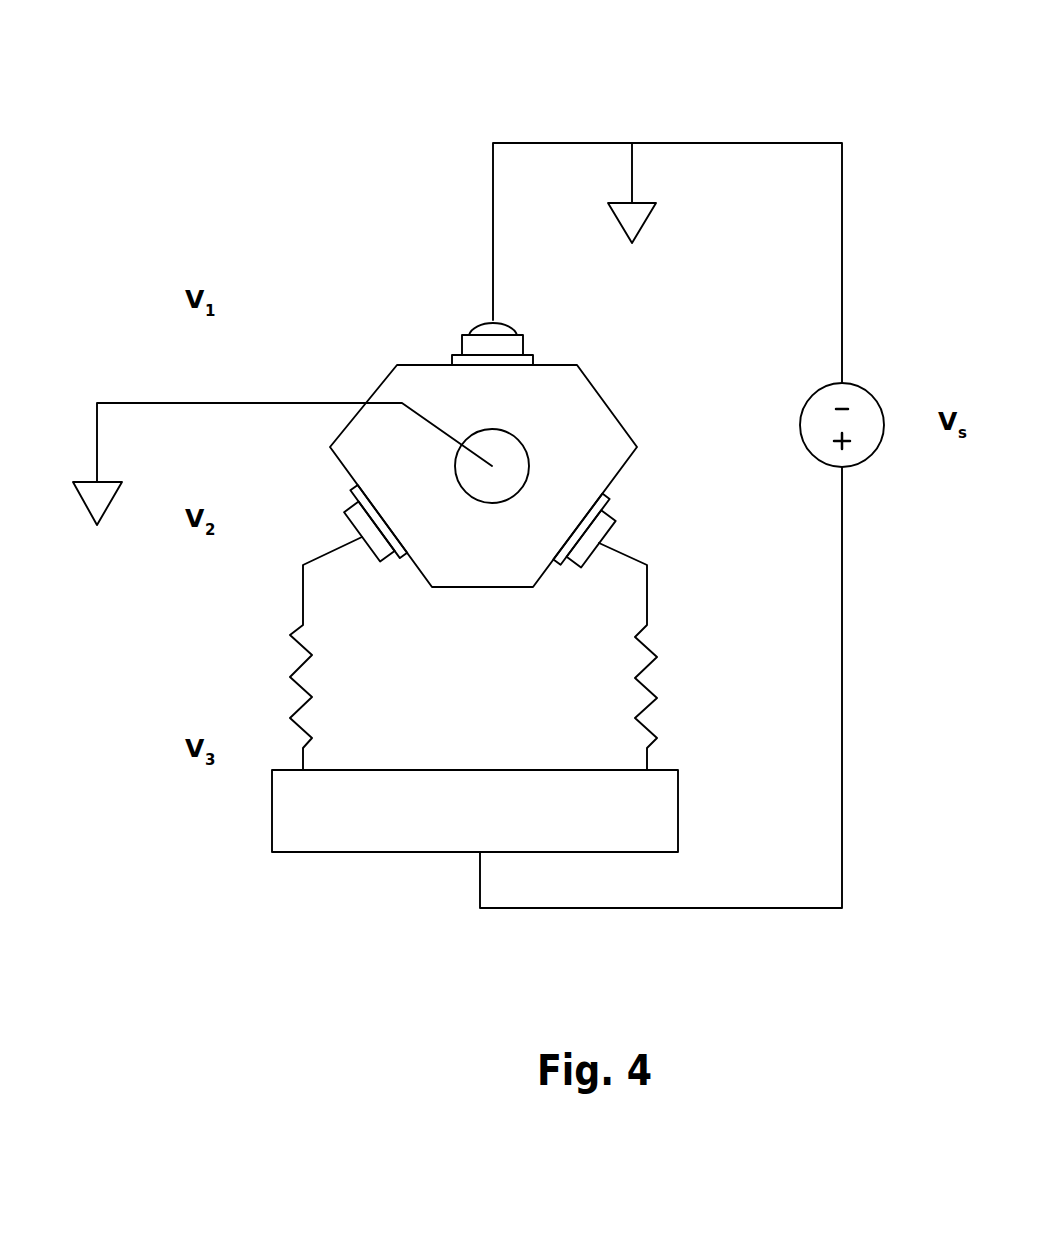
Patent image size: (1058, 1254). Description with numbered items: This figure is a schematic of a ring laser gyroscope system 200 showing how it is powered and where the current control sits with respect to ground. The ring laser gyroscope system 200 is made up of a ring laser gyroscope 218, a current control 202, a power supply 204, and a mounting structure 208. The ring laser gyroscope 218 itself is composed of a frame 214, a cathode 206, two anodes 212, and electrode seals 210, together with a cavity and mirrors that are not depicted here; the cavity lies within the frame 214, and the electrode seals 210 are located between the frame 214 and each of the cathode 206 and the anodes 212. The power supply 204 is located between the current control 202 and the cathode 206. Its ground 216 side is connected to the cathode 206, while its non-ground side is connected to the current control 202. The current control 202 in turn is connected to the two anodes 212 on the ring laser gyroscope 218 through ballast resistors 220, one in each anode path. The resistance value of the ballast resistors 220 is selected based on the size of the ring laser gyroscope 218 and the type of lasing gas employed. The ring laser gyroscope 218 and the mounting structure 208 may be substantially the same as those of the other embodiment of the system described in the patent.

The ring laser gyroscope system 200 is at (918, 43).
The current control 202 is at (678, 810).
The power supply 204 is at (868, 455).
The cathode 206 is at (523, 347).
The mounting structure 208 is at (490, 428).
The electrode seals 210 is at (448, 360).
The anodes 212 is at (380, 560).
The frame 214 is at (478, 548).
The ground 216 is at (642, 228).
The ring laser gyroscope 218 is at (632, 395).
The ballast resistors 220 is at (290, 677).